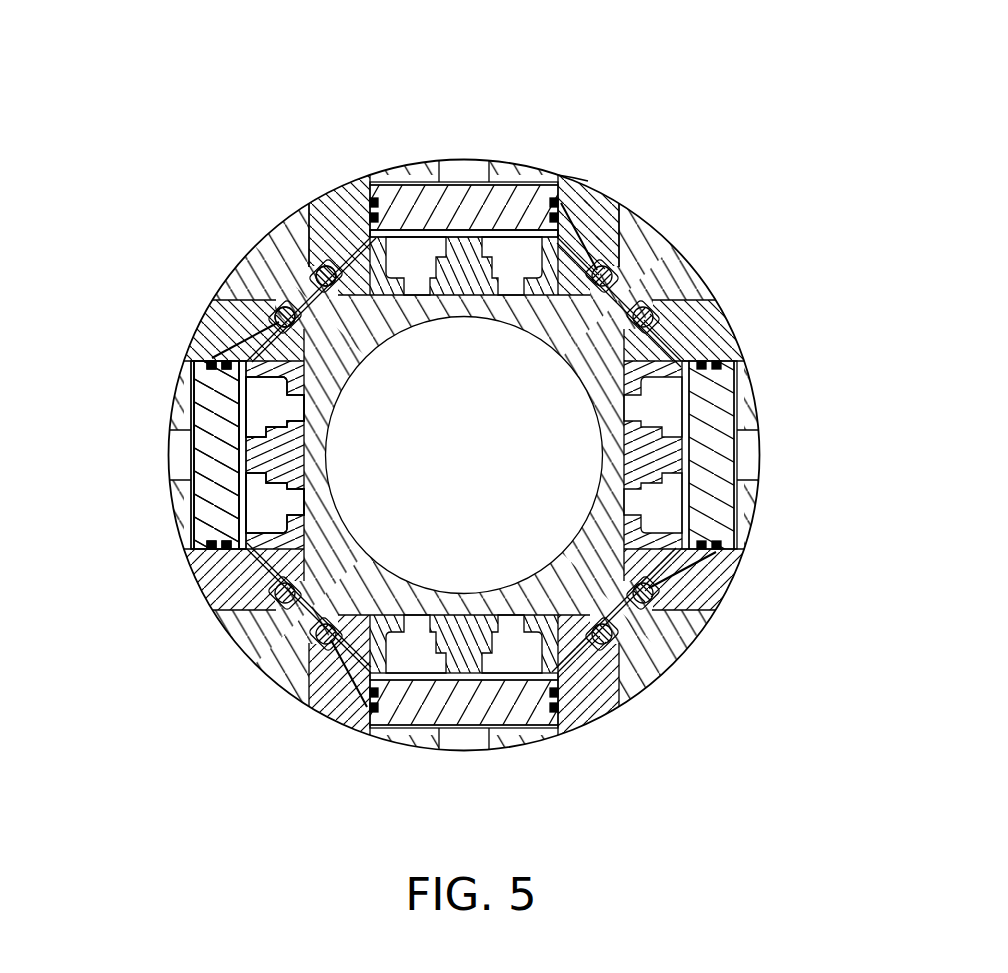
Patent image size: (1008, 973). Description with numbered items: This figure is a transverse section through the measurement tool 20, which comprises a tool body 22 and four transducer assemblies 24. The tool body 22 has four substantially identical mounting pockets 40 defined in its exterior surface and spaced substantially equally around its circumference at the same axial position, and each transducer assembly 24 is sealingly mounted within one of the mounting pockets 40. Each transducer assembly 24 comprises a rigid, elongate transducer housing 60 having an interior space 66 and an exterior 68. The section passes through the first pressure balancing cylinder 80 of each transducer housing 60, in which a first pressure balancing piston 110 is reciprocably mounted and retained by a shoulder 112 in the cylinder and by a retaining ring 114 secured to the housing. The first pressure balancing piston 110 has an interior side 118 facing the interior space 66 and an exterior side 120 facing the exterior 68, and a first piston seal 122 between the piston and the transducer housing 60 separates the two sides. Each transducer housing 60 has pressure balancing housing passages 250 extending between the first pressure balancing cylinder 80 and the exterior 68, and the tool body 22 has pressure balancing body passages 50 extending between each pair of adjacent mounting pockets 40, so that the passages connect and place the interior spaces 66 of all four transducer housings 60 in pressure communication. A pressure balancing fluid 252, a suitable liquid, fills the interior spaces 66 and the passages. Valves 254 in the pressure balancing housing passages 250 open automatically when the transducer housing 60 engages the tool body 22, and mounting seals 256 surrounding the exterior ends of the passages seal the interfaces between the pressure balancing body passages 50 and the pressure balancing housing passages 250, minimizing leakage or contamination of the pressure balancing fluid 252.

The measurement tool 20 is at (455, 140).
The tool body 22 is at (277, 655).
The transducer assembly 24 is at (465, 426).
The mounting pocket 40 is at (628, 235).
The pressure balancing body passage 50 is at (300, 292).
The transducer housing 60 is at (602, 222).
The interior space 66 is at (432, 228).
The exterior 68 is at (572, 166).
The first pressure balancing cylinder 80 is at (590, 205).
The first pressure balancing piston 110 is at (432, 205).
The shoulder 112 is at (390, 298).
The retaining ring 114 is at (520, 182).
The interior side 118 is at (440, 242).
The exterior side 120 is at (468, 178).
The first piston seal 122 is at (446, 240).
The pressure balancing housing passage 250 is at (330, 225).
The pressure balancing fluid 252 is at (275, 455).
The valve 254 is at (318, 262).
The mounting seal 256 is at (350, 275).